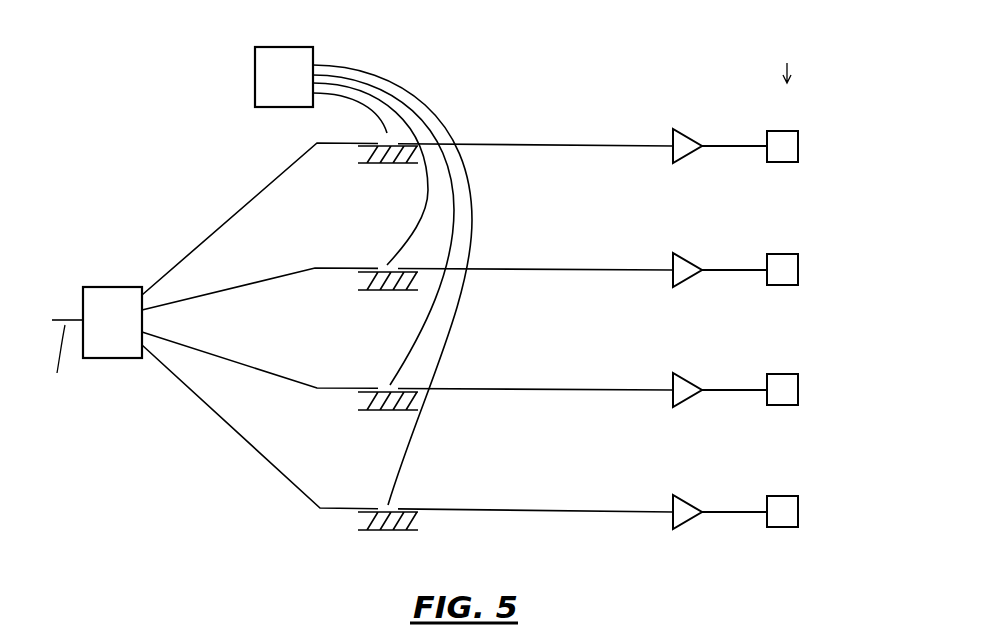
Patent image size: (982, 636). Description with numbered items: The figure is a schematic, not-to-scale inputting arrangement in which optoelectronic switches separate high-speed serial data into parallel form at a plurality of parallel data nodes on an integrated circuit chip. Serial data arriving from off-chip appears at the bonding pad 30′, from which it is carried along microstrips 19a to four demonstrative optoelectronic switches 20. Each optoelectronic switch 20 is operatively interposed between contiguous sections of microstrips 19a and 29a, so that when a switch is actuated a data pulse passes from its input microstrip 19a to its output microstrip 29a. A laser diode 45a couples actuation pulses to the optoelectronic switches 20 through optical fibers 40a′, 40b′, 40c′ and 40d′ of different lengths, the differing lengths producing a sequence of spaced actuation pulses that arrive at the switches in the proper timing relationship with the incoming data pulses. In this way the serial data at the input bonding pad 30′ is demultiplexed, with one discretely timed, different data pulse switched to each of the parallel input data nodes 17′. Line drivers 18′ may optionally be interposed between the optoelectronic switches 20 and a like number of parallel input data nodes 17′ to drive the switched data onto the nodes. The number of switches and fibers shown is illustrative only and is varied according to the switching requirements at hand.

The laser diode 45a is at (255, 72).
The optical fiber 40d′ is at (360, 66).
The optical fiber 40c′ is at (387, 82).
The optical fiber 40b′ is at (400, 115).
The optical fiber 40a′ is at (425, 160).
The bonding pad 30′ is at (108, 287).
The microstrip 19a is at (335, 143).
The optoelectronic switch 20 is at (395, 165).
The microstrip 29a is at (555, 143).
The line driver 18′ is at (682, 130).
The parallel input data node 17′ is at (785, 131).